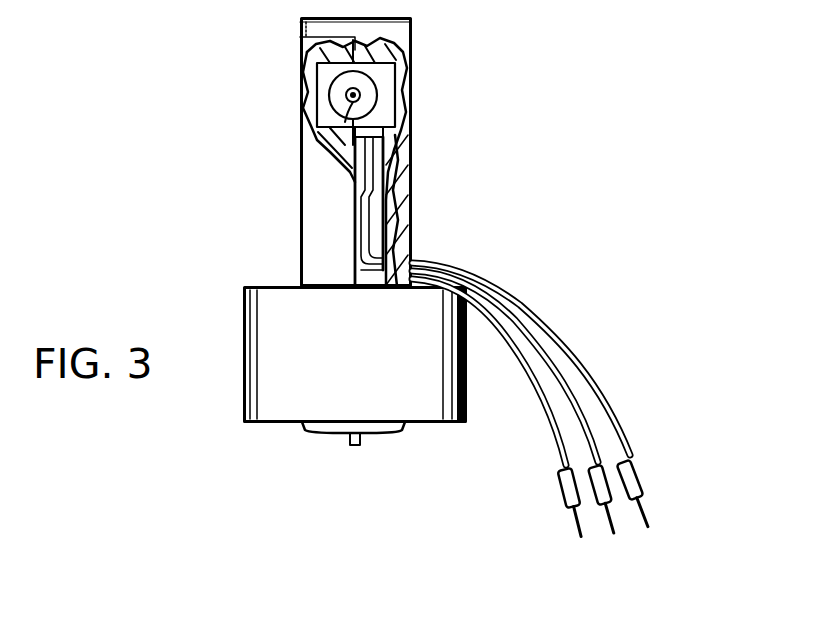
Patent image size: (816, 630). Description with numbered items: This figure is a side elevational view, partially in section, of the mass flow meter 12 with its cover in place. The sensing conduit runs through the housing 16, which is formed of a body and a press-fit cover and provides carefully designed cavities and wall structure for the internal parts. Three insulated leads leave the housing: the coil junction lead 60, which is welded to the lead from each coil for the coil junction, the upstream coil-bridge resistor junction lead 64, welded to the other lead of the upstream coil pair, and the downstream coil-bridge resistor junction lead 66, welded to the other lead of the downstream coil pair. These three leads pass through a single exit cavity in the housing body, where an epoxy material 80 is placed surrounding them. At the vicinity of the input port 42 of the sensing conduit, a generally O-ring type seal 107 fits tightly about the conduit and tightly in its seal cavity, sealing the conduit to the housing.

The mass flow meter 12 is at (456, 279).
The housing 16 is at (410, 197).
The epoxy material 80 is at (383, 248).
The O-ring type seal 107 is at (306, 433).
The input port 42 is at (358, 445).
The coil junction lead 60 is at (585, 427).
The upstream coil-bridge resistor junction lead 64 is at (615, 443).
The downstream coil-bridge resistor junction lead 66 is at (555, 435).